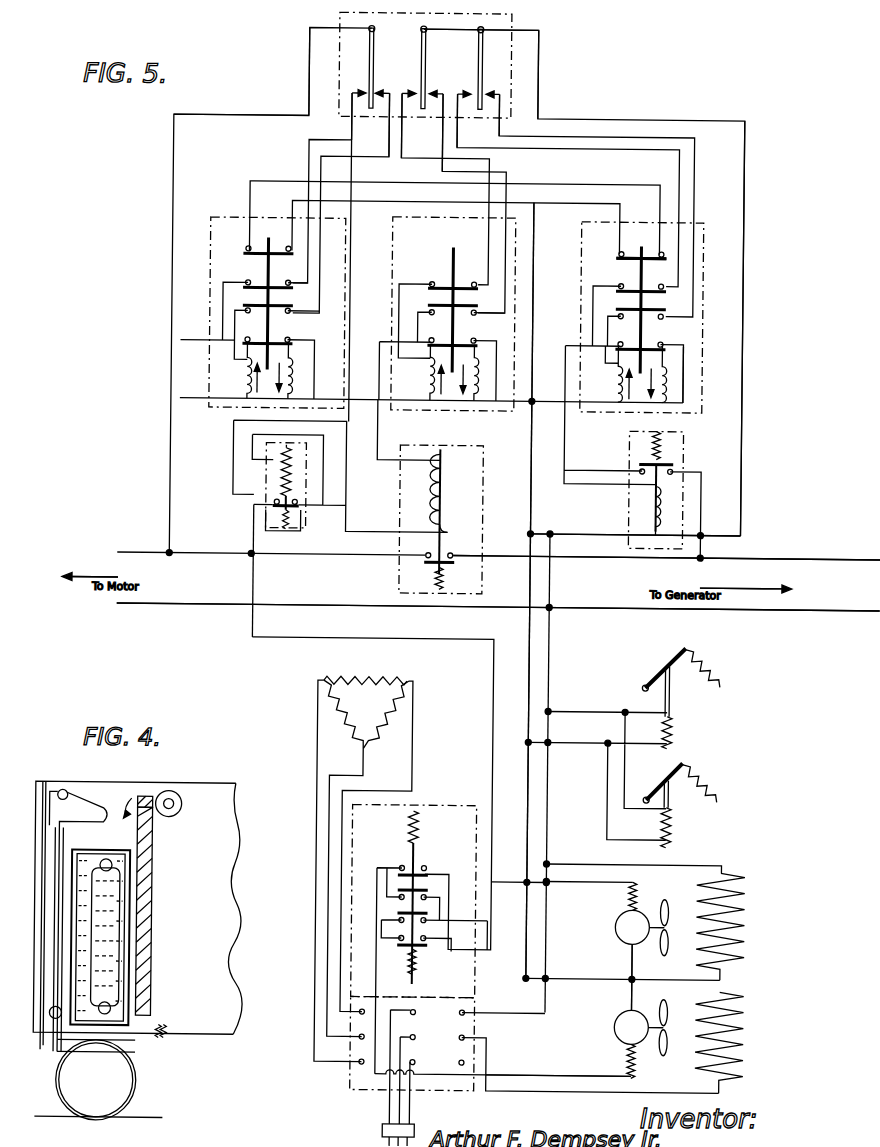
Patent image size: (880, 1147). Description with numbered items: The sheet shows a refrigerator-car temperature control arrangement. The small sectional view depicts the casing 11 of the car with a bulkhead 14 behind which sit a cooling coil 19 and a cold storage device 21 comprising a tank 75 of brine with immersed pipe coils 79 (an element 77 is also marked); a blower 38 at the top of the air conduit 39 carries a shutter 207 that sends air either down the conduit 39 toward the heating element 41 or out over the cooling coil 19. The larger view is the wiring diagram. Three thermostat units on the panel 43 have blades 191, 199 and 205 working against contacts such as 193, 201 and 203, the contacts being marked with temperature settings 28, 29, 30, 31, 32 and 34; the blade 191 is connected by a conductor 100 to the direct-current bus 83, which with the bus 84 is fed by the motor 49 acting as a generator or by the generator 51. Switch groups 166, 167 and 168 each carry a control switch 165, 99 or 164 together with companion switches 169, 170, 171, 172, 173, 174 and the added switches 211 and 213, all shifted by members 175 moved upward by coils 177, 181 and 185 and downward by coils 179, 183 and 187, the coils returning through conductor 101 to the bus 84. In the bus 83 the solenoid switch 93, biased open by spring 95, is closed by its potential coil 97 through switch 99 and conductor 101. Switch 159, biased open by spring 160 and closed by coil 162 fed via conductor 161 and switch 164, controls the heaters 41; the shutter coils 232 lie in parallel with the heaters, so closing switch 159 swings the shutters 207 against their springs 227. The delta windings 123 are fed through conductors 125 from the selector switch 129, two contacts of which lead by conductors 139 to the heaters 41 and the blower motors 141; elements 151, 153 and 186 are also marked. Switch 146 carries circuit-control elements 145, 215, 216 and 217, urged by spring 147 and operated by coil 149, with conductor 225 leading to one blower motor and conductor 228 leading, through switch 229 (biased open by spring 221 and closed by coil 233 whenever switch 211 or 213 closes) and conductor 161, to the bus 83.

In FIG. 4, the casing 11 is at (42, 784).
In FIG. 4, the bulkhead 14 is at (152, 850).
In FIG. 4, the cooling coil 19 is at (88, 798).
In FIG. 4, the cold storage device 21 is at (110, 937).
In FIG. 5, the 28 degree contact 28 is at (500, 108).
In FIG. 5, the 29 degree contact 29 is at (460, 105).
In FIG. 5, the 30 degree contact 30 is at (430, 120).
In FIG. 5, the 31 degree contact 31 is at (405, 105).
In FIG. 5, the 32 degree contact 32 is at (388, 105).
In FIG. 5, the 34 degree contact 34 is at (344, 108).
In FIG. 5, the blower 38 is at (661, 900).
In FIG. 4, the conduit 39 is at (155, 917).
In FIG. 5, the heating element 41 is at (748, 916).
In FIG. 4, the heating element 41 is at (172, 1026).
In FIG. 5, the support panel 43 is at (507, 20).
In FIG. 5, the direct current motor 49 is at (122, 585).
In FIG. 5, the direct current generator 51 is at (742, 600).
In FIG. 4, the tank 75 is at (130, 960).
In FIG. 4, the ball 77 is at (115, 872).
In FIG. 4, the pipe coil 79 is at (118, 893).
In FIG. 5, the bus conductor 83 is at (768, 568).
In FIG. 5, the direct current bus 84 is at (731, 612).
In FIG. 5, the solenoid switch 93 is at (455, 566).
In FIG. 5, the spring 95 is at (432, 575).
In FIG. 5, the operating coil 97 is at (452, 488).
In FIG. 5, the control switch 99 is at (478, 336).
In FIG. 5, the conductor 100 is at (278, 117).
In FIG. 5, the return conductor 101 is at (528, 404).
In FIG. 5, the stationary windings 123 is at (366, 712).
In FIG. 5, the conductors 125 is at (366, 776).
In FIG. 5, the selector switch 129 is at (455, 1082).
In FIG. 5, the conductors 139 is at (574, 862).
In FIG. 5, the blower motor 141 is at (618, 924).
In FIG. 5, the circuit-control element 145 is at (400, 940).
In FIG. 5, the switch 146 is at (460, 878).
In FIG. 5, the spring 147 is at (422, 830).
In FIG. 5, the operating coil 149 is at (408, 960).
In FIG. 5, the conductor 151 is at (730, 978).
In FIG. 5, the conductor 153 is at (634, 968).
In FIG. 5, the switch 159 is at (672, 469).
In FIG. 5, the spring 160 is at (652, 445).
In FIG. 5, the conductor 161 is at (745, 463).
In FIG. 5, the operating coil 162 is at (668, 507).
In FIG. 5, the control switch 164 is at (648, 345).
In FIG. 5, the control switch 165 is at (272, 350).
In FIG. 5, the switch group 166 is at (212, 236).
In FIG. 5, the switch group 167 is at (440, 412).
In FIG. 5, the switch group 168 is at (585, 240).
In FIG. 5, the switch 169 is at (240, 287).
In FIG. 5, the switch 170 is at (410, 305).
In FIG. 5, the switch 171 is at (665, 292).
In FIG. 5, the switch 172 is at (240, 307).
In FIG. 5, the switch 173 is at (475, 305).
In FIG. 5, the switch 174 is at (665, 313).
In FIG. 5, the member 175 is at (265, 267).
In FIG. 5, the operating coil 177 is at (240, 376).
In FIG. 5, the operating coil 179 is at (292, 383).
In FIG. 5, the operating coil 181 is at (425, 388).
In FIG. 5, the operating coil 183 is at (478, 378).
In FIG. 5, the operating coil 185 is at (612, 390).
In FIG. 5, the conductor 186 is at (690, 396).
In FIG. 5, the operating coil 187 is at (668, 378).
In FIG. 5, the thermostat blade 191 is at (362, 42).
In FIG. 5, the thermostat contact 193 is at (358, 90).
In FIG. 5, the thermostat blade 199 is at (416, 67).
In FIG. 5, the stationary contact 201 is at (485, 92).
In FIG. 5, the stationary contact 203 is at (475, 75).
In FIG. 5, the thermostat blade 205 is at (497, 40).
In FIG. 5, the shutter 207 is at (668, 660).
In FIG. 4, the shutter 207 is at (143, 795).
In FIG. 5, the switch 211 is at (258, 252).
In FIG. 5, the switch 213 is at (630, 256).
In FIG. 5, the circuit-control element 215 is at (400, 921).
In FIG. 5, the circuit-control element 216 is at (400, 898).
In FIG. 5, the circuit-control element 217 is at (400, 870).
In FIG. 5, the spring 221 is at (292, 535).
In FIG. 5, the conductor 225 is at (550, 1072).
In FIG. 5, the spring 227 is at (705, 660).
In FIG. 5, the conductor 228 is at (250, 633).
In FIG. 5, the switch 229 is at (276, 510).
In FIG. 5, the operating coil 232 is at (674, 720).
In FIG. 5, the operating coil 233 is at (282, 478).